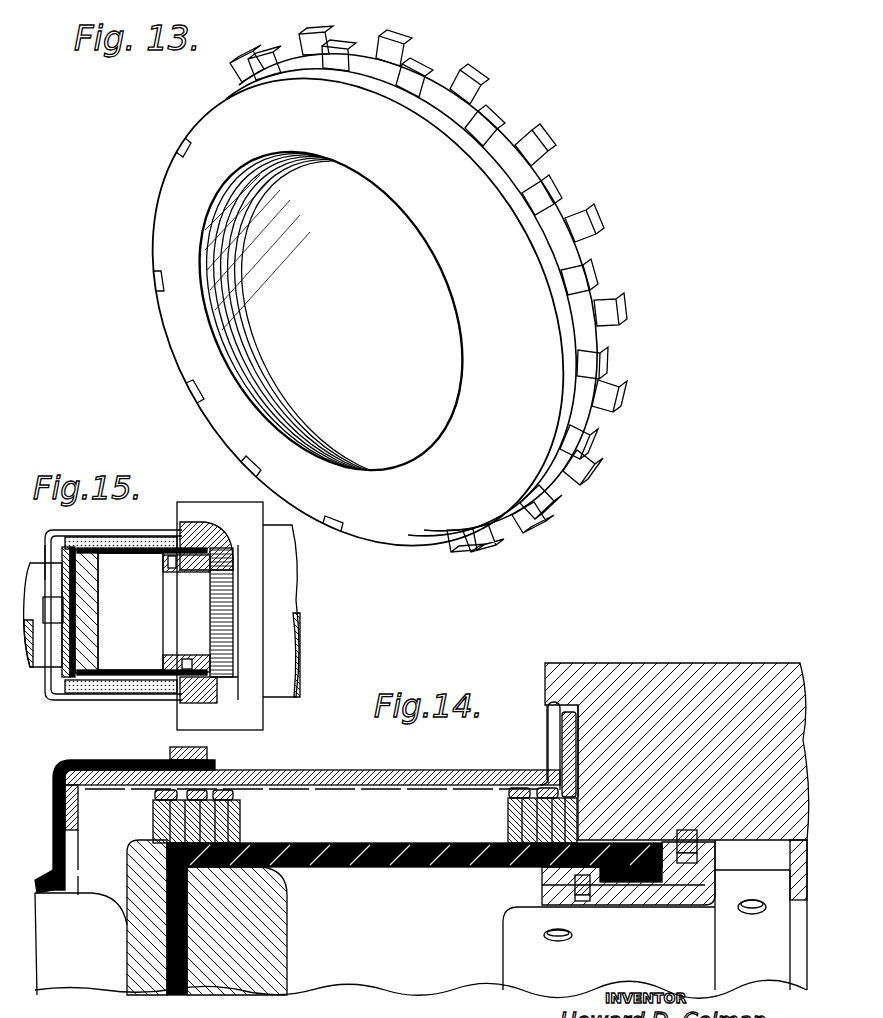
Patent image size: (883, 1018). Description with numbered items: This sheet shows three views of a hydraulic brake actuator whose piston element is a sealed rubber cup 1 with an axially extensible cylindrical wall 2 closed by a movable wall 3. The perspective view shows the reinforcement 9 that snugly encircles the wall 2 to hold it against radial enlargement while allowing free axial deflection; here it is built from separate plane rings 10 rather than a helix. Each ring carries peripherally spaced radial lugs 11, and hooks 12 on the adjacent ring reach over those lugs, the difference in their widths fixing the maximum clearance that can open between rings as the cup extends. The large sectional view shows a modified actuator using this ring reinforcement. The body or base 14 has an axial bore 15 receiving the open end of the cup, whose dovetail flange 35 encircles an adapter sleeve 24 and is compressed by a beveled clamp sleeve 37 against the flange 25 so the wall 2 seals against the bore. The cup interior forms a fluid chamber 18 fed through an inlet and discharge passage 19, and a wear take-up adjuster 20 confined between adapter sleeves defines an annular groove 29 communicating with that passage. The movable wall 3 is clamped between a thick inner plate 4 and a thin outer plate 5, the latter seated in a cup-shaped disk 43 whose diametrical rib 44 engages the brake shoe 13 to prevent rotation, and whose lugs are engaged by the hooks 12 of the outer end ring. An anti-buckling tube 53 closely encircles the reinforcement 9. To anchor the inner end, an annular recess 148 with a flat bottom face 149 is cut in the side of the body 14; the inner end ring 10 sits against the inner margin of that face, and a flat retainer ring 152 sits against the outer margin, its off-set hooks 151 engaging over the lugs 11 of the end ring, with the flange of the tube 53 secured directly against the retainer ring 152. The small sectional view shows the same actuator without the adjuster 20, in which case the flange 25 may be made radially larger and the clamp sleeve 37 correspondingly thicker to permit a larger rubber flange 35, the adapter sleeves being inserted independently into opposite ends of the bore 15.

In FIG. 15, the rubber cup 1 is at (127, 563).
In FIG. 15, the cylindrical wall 2 is at (160, 556).
In FIG. 14, the cylindrical wall 2 is at (395, 868).
In FIG. 15, the movable wall 3 is at (80, 635).
In FIG. 14, the movable wall 3 is at (170, 940).
In FIG. 15, the circular plate 4 is at (98, 588).
In FIG. 14, the circular plate 4 is at (285, 908).
In FIG. 15, the circular plate 5 is at (62, 576).
In FIG. 14, the circular plate 5 is at (142, 868).
In FIG. 13, the reinforcement 9 is at (485, 93).
In FIG. 15, the reinforcement 9 is at (88, 532).
In FIG. 14, the reinforcement 9 is at (256, 812).
In FIG. 13, the rings 10 is at (428, 250).
In FIG. 14, the rings 10 is at (510, 812).
In FIG. 13, the radial lugs 11 is at (598, 282).
In FIG. 13, the hooks 12 is at (525, 120).
In FIG. 15, the brake shoe 13 is at (30, 668).
In FIG. 14, the brake shoe 13 is at (80, 982).
In FIG. 15, the base 14 is at (232, 510).
In FIG. 14, the base 14 is at (740, 660).
In FIG. 14, the axial bore 15 is at (750, 843).
In FIG. 15, the fluid chamber 18 is at (118, 665).
In FIG. 15, the inlet and discharge passage 19 is at (222, 690).
In FIG. 14, the wear take-up adjuster 20 is at (509, 958).
In FIG. 15, the adapter sleeve 24 is at (178, 566).
In FIG. 14, the adapter sleeve 24 is at (545, 896).
In FIG. 15, the annular flange 25 is at (196, 658).
In FIG. 15, the annular groove 29 is at (218, 605).
In FIG. 15, the dovetail flange 35 is at (186, 522).
In FIG. 15, the clamp sleeve 37 is at (172, 660).
In FIG. 14, the clamp sleeve 37 is at (545, 876).
In FIG. 15, the cup-shaped disk 43 is at (48, 555).
In FIG. 15, the diametrical rib 44 is at (46, 640).
In FIG. 15, the anti-buckling tube 53 is at (110, 536).
In FIG. 14, the anti-buckling tube 53 is at (372, 778).
In FIG. 14, the annular recess 148 is at (577, 702).
In FIG. 14, the flat bottom face 149 is at (590, 705).
In FIG. 14, the off-set hooks 151 is at (553, 773).
In FIG. 14, the retainer ring 152 is at (584, 715).